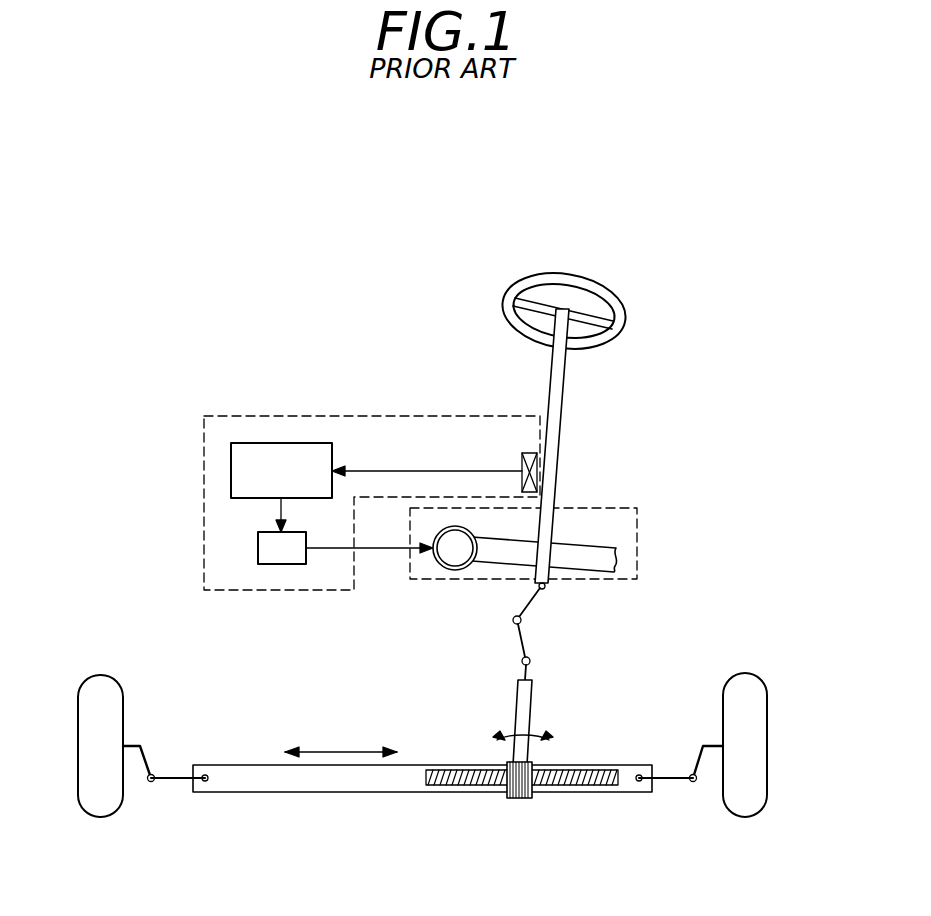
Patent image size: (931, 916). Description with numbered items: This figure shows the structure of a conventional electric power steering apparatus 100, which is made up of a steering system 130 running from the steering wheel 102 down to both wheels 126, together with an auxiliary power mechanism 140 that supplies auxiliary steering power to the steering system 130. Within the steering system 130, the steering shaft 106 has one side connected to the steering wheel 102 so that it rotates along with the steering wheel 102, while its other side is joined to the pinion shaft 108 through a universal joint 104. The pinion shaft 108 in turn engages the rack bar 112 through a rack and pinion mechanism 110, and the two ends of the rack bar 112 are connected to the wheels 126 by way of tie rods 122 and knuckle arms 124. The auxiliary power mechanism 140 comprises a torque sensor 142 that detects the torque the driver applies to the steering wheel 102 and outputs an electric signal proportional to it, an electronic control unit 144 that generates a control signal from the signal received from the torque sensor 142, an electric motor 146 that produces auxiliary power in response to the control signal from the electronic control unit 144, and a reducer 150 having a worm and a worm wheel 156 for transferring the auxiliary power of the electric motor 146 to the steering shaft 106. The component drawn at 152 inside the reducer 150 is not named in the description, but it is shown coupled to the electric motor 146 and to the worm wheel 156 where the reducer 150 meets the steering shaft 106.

The power steering apparatus 100 is at (197, 246).
The steering wheel 102 is at (503, 302).
The universal joint 104 is at (532, 603).
The steering shaft 106 is at (562, 408).
The pinion shaft 108 is at (516, 707).
The rack and pinion mechanism 110 is at (565, 787).
The rack bar 112 is at (228, 768).
The tie rod 122 is at (674, 777).
The knuckle arm 124 is at (135, 745).
The wheel 126 is at (753, 683).
The steering system 130 is at (572, 391).
The auxiliary power mechanism 140 is at (204, 451).
The torque sensor 142 is at (522, 462).
The electronic control unit 144 is at (318, 443).
The electric motor 146 is at (258, 548).
The reducer 150 is at (638, 548).
The motor 152 is at (452, 553).
The worm wheel 156 is at (555, 538).